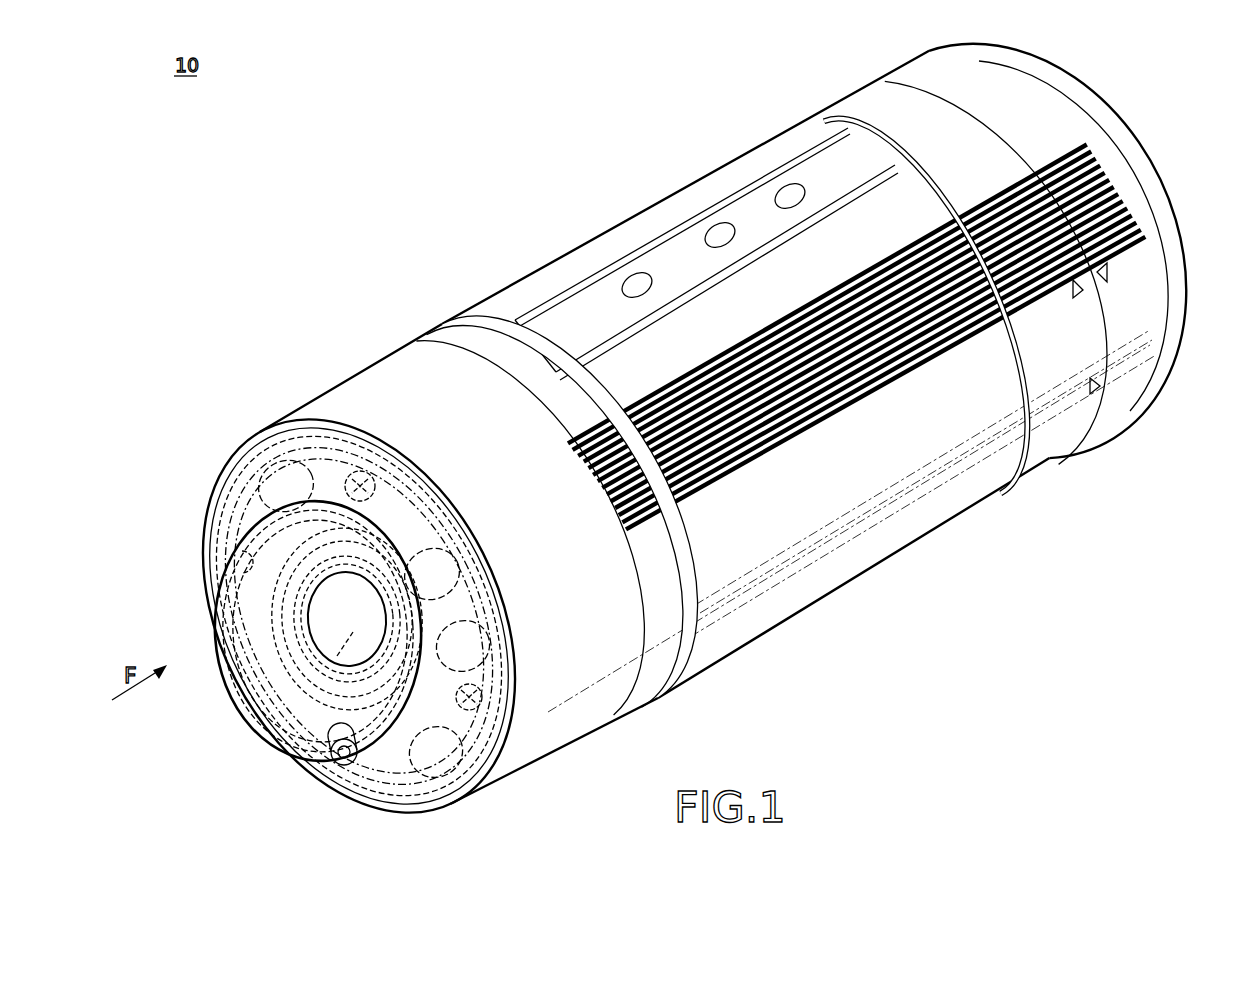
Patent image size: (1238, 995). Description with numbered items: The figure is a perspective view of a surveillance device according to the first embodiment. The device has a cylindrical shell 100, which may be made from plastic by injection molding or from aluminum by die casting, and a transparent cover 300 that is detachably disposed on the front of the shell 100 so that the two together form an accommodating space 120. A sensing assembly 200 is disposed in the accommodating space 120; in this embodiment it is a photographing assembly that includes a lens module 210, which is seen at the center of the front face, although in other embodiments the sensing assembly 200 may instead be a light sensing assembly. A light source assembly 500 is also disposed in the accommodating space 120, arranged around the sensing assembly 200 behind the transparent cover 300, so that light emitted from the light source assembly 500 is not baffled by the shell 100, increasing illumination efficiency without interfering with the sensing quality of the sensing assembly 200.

The shell 100 is at (331, 376).
The accommodating space 120 is at (251, 476).
The transparent cover 300 is at (188, 540).
The sensing assembly 200 is at (294, 610).
The lens module 210 is at (312, 740).
The light source assembly 500 is at (500, 634).